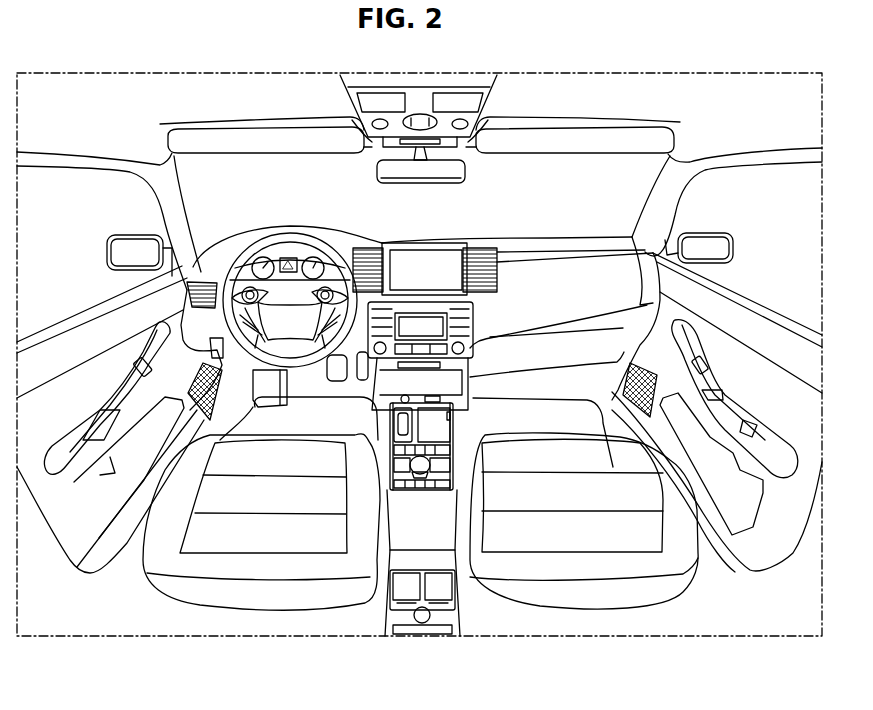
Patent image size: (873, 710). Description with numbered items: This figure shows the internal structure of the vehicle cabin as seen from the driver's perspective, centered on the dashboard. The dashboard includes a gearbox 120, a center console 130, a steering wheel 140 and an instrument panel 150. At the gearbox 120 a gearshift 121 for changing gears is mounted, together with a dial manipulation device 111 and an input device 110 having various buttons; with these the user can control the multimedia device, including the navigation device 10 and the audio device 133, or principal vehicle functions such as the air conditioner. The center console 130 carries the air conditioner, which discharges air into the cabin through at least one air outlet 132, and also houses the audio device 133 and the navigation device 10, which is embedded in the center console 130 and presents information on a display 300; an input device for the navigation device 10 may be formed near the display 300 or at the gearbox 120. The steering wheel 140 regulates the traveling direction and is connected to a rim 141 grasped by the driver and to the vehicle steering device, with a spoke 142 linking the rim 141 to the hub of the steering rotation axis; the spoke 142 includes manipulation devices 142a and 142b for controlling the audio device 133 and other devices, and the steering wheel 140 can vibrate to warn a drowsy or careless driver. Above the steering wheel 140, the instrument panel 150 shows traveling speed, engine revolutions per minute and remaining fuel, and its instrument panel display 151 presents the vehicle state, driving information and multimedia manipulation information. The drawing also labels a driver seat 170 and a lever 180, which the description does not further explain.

The navigation device 10 is at (442, 235).
The input device 110 is at (437, 461).
The dial manipulation device 111 is at (412, 464).
The gearbox 120 is at (423, 446).
The gearshift 121 is at (388, 418).
The center console 130 is at (508, 226).
The air outlet 132 is at (497, 270).
The audio device 133 is at (482, 312).
The steering wheel 140 is at (309, 263).
The rim 141 is at (263, 237).
The spoke 142 is at (185, 300).
The manipulation device 142a is at (240, 273).
The manipulation device 142b is at (335, 265).
The instrument panel 150 is at (288, 250).
The instrument panel display 151 is at (296, 262).
The driver seat 170 is at (267, 595).
The lever 180 is at (333, 373).
The display 300 is at (428, 250).